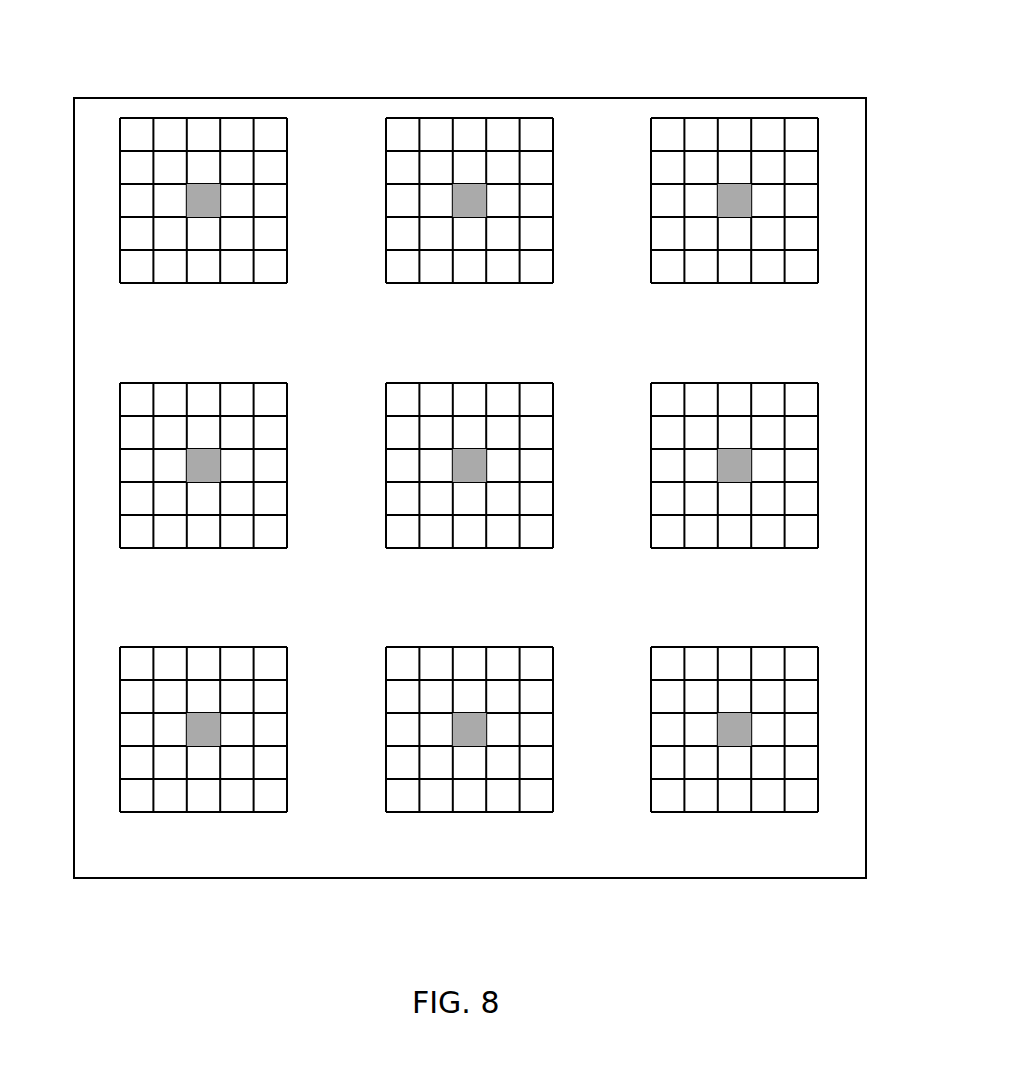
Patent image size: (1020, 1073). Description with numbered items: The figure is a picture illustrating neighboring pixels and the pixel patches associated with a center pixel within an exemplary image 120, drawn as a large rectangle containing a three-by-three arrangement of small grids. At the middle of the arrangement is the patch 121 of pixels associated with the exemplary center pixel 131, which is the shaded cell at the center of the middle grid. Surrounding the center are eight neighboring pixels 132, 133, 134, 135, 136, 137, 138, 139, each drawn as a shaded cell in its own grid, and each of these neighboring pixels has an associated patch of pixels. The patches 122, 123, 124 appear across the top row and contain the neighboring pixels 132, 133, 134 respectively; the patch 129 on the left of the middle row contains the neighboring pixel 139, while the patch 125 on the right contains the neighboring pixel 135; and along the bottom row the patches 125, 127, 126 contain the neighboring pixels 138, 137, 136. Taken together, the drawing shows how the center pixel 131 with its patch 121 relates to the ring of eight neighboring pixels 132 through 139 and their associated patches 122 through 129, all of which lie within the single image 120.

The image 120 is at (838, 93).
The patch 121 is at (406, 551).
The patch 122 is at (117, 137).
The patch 123 is at (385, 139).
The patch 124 is at (649, 140).
The patch 125 is at (818, 503).
The patch 126 is at (770, 818).
The patch 127 is at (501, 818).
The patch 129 is at (118, 495).
The center pixel 131 is at (470, 448).
The neighboring pixel 132 is at (205, 182).
The neighboring pixel 133 is at (472, 184).
The neighboring pixel 134 is at (738, 184).
The neighboring pixel 135 is at (753, 465).
The neighboring pixel 136 is at (736, 747).
The neighboring pixel 137 is at (469, 747).
The neighboring pixel 138 is at (202, 747).
The neighboring pixel 139 is at (183, 465).